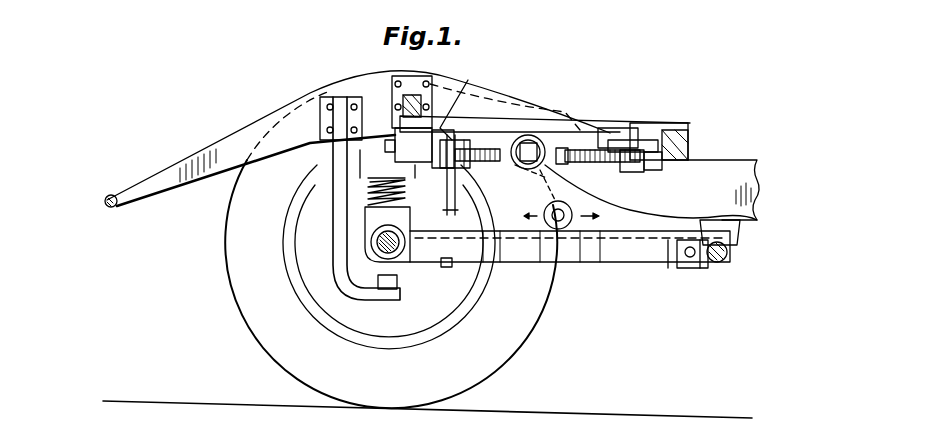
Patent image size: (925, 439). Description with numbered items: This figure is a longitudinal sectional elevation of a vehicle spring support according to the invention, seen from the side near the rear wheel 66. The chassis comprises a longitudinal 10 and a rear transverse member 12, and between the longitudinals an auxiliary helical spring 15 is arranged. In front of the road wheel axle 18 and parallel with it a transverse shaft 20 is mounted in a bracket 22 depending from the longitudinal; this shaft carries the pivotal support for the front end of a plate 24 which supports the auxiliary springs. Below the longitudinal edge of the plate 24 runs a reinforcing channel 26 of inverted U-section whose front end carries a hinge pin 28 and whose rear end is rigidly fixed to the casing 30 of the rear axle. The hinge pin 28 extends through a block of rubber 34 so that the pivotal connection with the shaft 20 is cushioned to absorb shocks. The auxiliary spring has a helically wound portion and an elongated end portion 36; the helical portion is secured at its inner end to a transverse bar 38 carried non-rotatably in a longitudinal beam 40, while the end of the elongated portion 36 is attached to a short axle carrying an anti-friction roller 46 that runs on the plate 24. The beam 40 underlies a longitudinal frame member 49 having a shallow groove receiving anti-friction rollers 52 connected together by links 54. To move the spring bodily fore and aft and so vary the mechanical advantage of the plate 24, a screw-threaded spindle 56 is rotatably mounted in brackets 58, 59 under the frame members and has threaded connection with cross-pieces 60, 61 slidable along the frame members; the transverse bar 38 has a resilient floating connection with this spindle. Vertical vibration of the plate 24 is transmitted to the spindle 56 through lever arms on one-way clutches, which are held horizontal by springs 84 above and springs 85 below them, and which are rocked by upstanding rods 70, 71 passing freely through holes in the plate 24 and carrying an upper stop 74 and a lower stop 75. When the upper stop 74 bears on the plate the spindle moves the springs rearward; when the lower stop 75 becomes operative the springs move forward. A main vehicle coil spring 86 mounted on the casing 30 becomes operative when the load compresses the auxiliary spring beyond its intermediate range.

The longitudinal 10 is at (250, 118).
The rear transverse member 12 is at (118, 208).
The auxiliary helical spring 15 is at (530, 113).
The road wheel axle 18 is at (378, 252).
The transverse shaft 20 is at (716, 263).
The bracket 22 is at (723, 243).
The plate 24 is at (650, 228).
The reinforcing channel 26 is at (615, 268).
The hinge pin 28 is at (670, 268).
The casing 30 is at (372, 244).
The block of rubber 34 is at (686, 256).
The elongated end portion 36 is at (528, 188).
The transverse bar 38 is at (565, 120).
The longitudinal beam 40 is at (575, 140).
The anti-friction roller 46 is at (562, 230).
The longitudinal frame member 49 is at (690, 128).
The anti-friction roller 52 is at (640, 133).
The link 54 is at (617, 127).
The screw-threaded spindle 56 is at (622, 164).
The bracket 58 is at (648, 167).
The bracket 59 is at (400, 147).
The cross-piece 60 is at (500, 110).
The cross-piece 61 is at (568, 165).
The rear wheel 66 is at (240, 318).
The upstanding rod 70 is at (412, 176).
The upstanding rod 71 is at (457, 193).
The upper stop 74 is at (420, 213).
The lower stop 75 is at (445, 265).
The spring 84 is at (448, 110).
The spring 85 is at (447, 200).
The main vehicle coil spring 86 is at (405, 180).